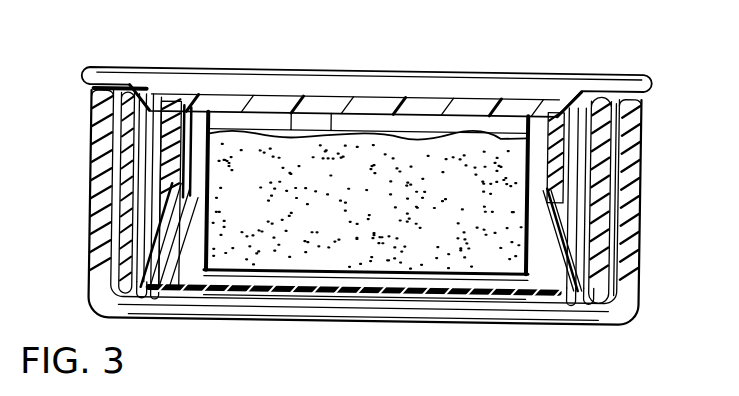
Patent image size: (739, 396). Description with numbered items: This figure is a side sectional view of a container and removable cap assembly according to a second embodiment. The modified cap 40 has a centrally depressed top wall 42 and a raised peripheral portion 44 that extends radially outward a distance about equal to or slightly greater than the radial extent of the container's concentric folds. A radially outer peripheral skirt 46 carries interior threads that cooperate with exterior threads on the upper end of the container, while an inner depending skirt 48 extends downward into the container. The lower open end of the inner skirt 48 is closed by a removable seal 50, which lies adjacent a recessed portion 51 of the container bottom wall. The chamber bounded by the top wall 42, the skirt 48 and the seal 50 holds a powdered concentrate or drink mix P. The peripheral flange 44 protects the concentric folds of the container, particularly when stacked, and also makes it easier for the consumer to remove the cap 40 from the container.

The modified cap 40 is at (504, 67).
The centrally depressed top wall 42 is at (281, 95).
The raised peripheral portion 44 is at (620, 76).
The radially outer peripheral skirt 46 is at (175, 160).
The inner depending skirt 48 is at (193, 278).
The removable seal 50 is at (298, 271).
The recessed portion of the container bottom wall 51 is at (490, 290).
The powdered concentrate or drink mix P is at (407, 249).